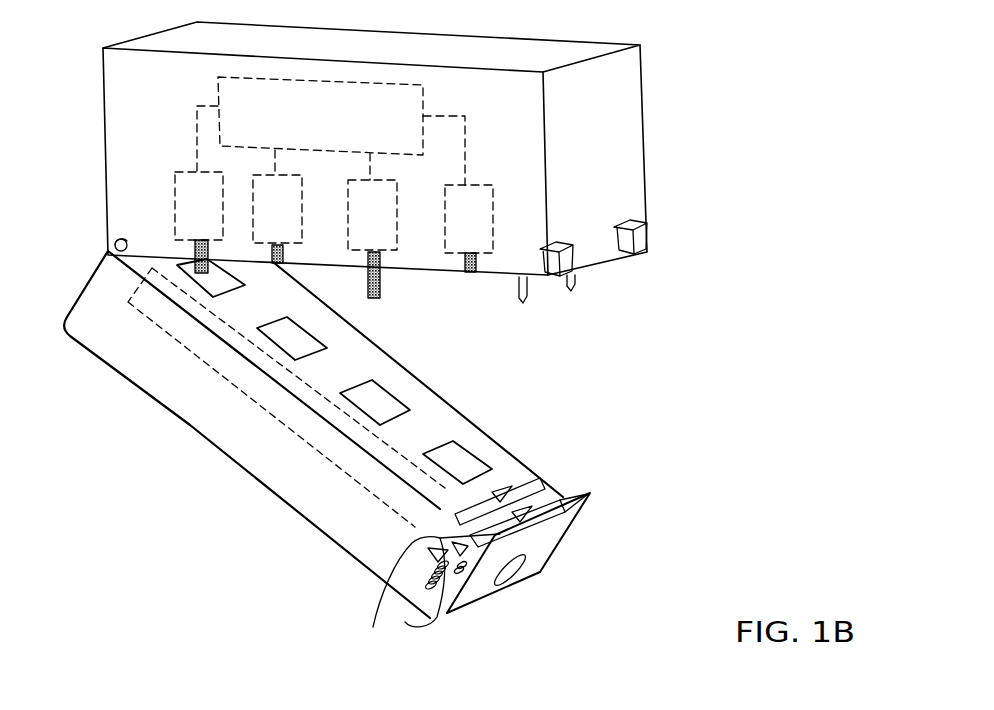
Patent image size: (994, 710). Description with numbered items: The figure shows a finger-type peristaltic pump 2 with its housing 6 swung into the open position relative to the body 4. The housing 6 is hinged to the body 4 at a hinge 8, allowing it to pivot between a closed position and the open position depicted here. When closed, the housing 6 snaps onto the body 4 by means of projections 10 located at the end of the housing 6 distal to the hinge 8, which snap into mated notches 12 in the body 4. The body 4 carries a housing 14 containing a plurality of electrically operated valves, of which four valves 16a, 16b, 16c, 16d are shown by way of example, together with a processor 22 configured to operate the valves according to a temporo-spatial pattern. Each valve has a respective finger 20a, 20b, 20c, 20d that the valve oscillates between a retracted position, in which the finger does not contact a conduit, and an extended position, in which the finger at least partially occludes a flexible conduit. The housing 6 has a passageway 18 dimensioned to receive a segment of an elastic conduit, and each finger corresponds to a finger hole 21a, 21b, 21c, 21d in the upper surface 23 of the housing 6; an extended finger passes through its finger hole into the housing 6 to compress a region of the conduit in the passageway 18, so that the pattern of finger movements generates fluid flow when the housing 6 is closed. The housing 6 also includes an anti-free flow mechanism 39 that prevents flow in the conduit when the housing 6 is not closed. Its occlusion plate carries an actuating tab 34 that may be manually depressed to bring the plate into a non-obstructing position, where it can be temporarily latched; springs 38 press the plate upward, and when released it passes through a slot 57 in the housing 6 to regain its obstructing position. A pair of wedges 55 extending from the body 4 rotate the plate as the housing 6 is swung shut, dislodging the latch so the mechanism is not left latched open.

The finger-type peristaltic pump 2 is at (692, 165).
The body 4 is at (105, 127).
The housing 6 is at (89, 284).
The hinge 8 is at (114, 243).
The projections 10 is at (590, 493).
The notches 12 is at (648, 232).
The housing 14 is at (646, 100).
The electrically operated valve 16a is at (180, 222).
The electrically operated valve 16b is at (298, 225).
The electrically operated valve 16c is at (393, 230).
The electrically operated valve 16d is at (490, 234).
The passageway 18 is at (203, 343).
The finger 20a is at (178, 264).
The finger 20b is at (283, 263).
The finger 20c is at (380, 291).
The finger 20d is at (471, 274).
The finger hole 21a is at (220, 280).
The finger hole 21b is at (285, 333).
The finger hole 21c is at (362, 388).
The finger hole 21d is at (437, 452).
The processor 22 is at (336, 144).
The upper surface 23 is at (292, 383).
The actuating tab 34 is at (502, 492).
The spring 38 is at (428, 602).
The anti-free flow mechanism 39 is at (513, 550).
The wedges 55 is at (530, 300).
The slot 57 is at (560, 500).